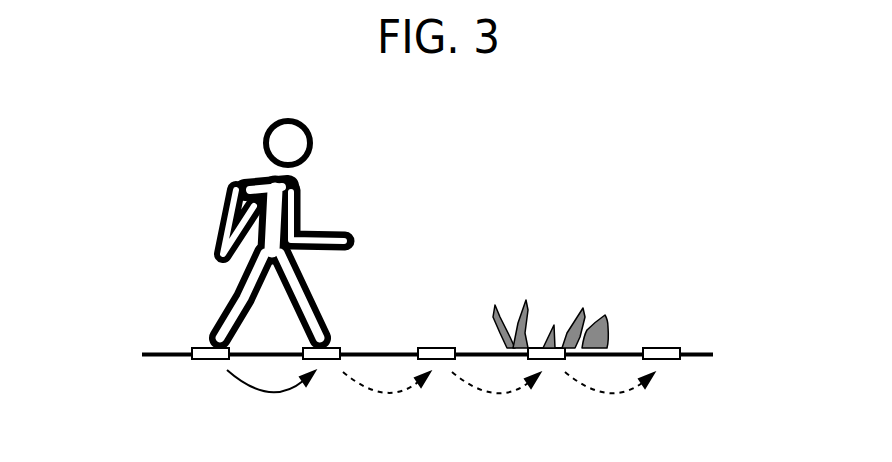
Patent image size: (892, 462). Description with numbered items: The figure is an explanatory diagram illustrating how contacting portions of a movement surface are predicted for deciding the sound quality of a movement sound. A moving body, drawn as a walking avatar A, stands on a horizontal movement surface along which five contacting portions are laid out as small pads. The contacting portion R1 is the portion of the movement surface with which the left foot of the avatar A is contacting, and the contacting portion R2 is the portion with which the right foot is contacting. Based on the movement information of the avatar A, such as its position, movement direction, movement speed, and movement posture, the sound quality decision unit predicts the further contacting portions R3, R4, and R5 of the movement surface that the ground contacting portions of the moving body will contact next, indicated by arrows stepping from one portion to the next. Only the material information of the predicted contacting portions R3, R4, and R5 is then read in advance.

The avatar A is at (250, 178).
The contacting portion R1 is at (205, 348).
The contacting portion R2 is at (337, 347).
The predicted contacting portion R3 is at (442, 348).
The predicted contacting portion R4 is at (563, 348).
The predicted contacting portion R5 is at (665, 348).